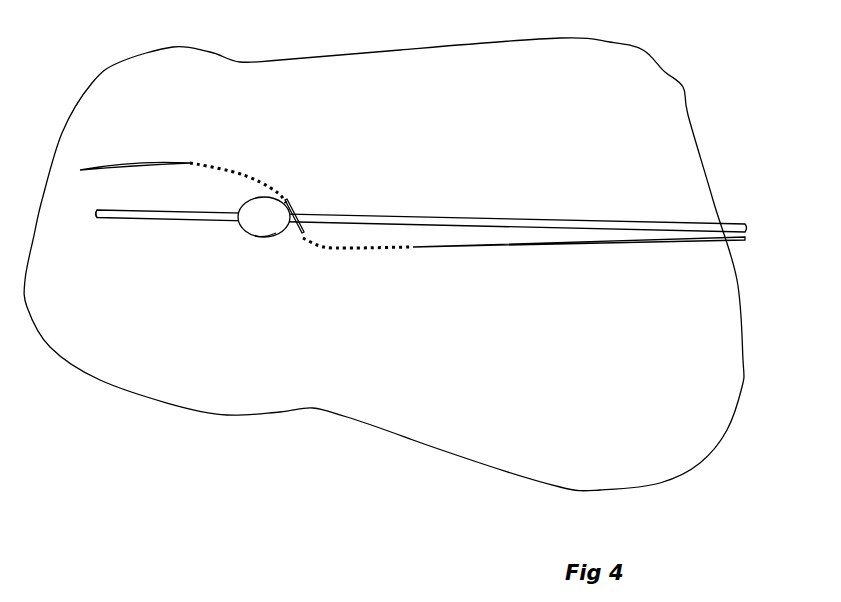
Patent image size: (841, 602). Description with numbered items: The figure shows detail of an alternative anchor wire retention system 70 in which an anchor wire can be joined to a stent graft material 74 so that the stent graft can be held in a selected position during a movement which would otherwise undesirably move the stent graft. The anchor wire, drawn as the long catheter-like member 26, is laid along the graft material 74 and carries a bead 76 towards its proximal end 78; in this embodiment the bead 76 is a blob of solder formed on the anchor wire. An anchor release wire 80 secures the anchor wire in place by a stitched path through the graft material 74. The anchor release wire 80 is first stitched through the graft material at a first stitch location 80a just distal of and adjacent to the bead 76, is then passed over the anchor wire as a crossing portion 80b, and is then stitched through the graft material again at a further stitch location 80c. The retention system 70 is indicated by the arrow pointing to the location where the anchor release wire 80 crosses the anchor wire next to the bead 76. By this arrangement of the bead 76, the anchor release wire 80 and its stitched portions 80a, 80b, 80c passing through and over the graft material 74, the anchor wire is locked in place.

The catheter 26 is at (508, 220).
The anchor wire retention system 70 is at (298, 192).
The stent graft material 74 is at (443, 63).
The bead 76 is at (257, 215).
The proximal end 78 is at (100, 218).
The anchor release wire 80 is at (463, 247).
The first suture portion 80a is at (337, 252).
The second suture portion 80b is at (273, 233).
The third suture portion 80c is at (237, 167).